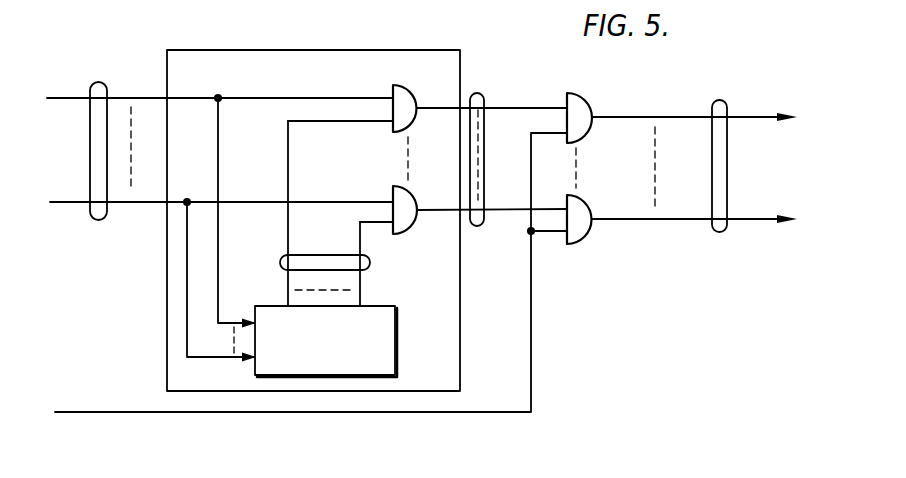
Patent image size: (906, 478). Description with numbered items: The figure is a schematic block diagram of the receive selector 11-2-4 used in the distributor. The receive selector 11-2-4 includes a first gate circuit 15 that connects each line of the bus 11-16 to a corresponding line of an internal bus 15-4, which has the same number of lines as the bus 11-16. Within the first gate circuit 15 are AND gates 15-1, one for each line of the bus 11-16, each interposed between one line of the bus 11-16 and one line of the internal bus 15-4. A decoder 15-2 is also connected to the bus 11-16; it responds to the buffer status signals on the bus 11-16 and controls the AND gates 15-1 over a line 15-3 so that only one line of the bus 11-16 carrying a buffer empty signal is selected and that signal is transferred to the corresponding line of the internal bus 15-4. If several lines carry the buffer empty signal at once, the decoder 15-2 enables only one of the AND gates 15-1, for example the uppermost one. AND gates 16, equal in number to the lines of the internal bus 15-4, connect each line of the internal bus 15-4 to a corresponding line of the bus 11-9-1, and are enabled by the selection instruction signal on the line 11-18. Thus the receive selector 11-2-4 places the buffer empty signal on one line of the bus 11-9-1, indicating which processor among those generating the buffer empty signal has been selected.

The bus 11-16 is at (103, 82).
The first gate circuit 15 is at (430, 50).
The AND gates 15-1 is at (415, 96).
The decoder 15-2 is at (397, 344).
The line 15-3 is at (280, 262).
The internal bus 15-4 is at (476, 228).
The AND gates 16 is at (588, 102).
The bus 11-9-1 is at (719, 100).
The line 11-18 is at (134, 412).
The receive selector 11-2-4 is at (572, 352).